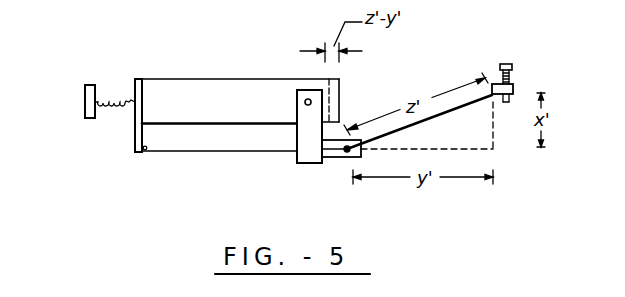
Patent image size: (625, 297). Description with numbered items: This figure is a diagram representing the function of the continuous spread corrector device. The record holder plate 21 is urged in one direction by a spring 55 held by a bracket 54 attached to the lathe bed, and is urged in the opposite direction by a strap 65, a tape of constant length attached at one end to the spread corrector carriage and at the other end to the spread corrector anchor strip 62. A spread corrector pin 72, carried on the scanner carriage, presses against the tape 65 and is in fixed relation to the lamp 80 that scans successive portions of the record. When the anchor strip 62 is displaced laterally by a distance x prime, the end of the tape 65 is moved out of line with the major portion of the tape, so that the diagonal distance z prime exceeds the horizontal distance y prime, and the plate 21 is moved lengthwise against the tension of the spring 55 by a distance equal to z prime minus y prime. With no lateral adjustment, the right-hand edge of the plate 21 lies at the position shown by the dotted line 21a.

The record holder plate 21 is at (191, 79).
The dotted line 21a is at (331, 98).
The bracket 54 is at (83, 95).
The spring 55 is at (116, 97).
The spread corrector anchor strip 62 is at (510, 88).
The strap 65 is at (245, 153).
The spread corrector pin 72 is at (349, 155).
The lamp 80 is at (305, 99).